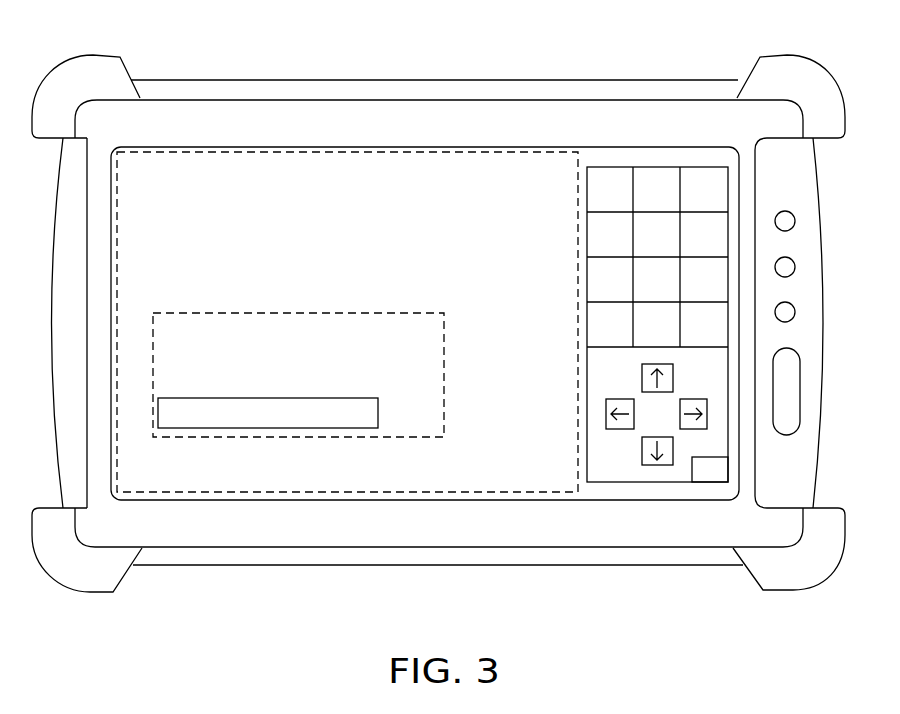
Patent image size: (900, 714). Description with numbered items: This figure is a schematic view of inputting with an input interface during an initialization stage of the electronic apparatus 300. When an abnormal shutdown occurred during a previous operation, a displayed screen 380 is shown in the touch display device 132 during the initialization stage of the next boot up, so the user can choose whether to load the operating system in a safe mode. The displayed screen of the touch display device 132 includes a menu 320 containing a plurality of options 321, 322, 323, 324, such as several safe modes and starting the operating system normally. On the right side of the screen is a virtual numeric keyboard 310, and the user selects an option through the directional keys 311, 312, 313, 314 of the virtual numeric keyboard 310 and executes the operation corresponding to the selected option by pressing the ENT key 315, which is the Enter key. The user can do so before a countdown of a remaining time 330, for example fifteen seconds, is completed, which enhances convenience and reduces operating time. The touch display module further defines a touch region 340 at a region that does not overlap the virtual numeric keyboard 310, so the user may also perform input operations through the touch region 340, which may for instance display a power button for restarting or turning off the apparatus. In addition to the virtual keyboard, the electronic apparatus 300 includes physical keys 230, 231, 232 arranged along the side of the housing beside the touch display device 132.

The electronic apparatus 300 is at (893, 591).
The touch display device 132 is at (387, 147).
The touch region 340 is at (212, 152).
The virtual numeric keyboard 310 is at (603, 167).
The displayed screen 380 is at (658, 157).
The directional key 311 is at (673, 378).
The directional key 312 is at (612, 429).
The directional key 313 is at (652, 465).
The directional key 314 is at (707, 422).
The ENT key 315 is at (700, 482).
The menu 320 is at (445, 369).
The option 321 is at (228, 332).
The option 322 is at (378, 356).
The option 323 is at (366, 383).
The option 324 is at (378, 412).
The remaining time 330 is at (563, 463).
The physical key 230 is at (795, 221).
The physical key 231 is at (795, 267).
The physical key 232 is at (795, 312).